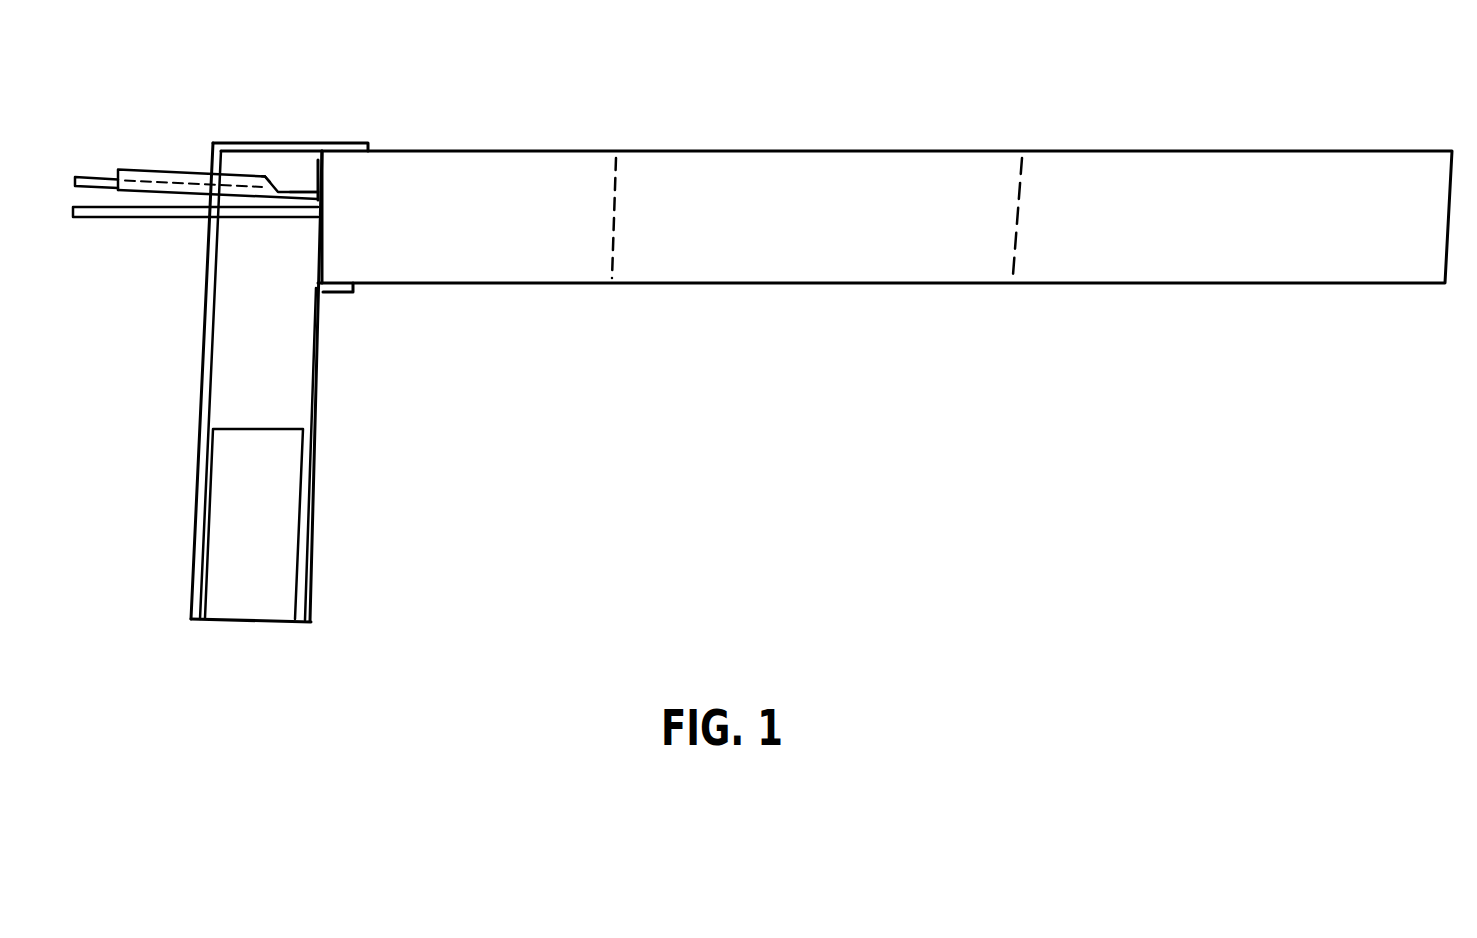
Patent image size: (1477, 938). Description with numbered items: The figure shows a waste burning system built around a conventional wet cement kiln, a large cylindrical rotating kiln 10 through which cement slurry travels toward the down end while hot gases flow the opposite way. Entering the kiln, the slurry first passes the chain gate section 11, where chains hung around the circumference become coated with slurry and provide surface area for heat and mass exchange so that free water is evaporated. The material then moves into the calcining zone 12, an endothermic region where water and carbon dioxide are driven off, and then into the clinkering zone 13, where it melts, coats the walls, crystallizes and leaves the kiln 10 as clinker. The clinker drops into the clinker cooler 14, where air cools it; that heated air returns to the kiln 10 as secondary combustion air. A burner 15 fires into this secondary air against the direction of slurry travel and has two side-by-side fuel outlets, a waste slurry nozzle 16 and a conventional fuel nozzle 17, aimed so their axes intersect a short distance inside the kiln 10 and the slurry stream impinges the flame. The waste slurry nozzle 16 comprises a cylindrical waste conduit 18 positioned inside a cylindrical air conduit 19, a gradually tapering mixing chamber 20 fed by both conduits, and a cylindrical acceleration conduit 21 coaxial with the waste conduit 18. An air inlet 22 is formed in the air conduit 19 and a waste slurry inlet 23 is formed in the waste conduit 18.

The kiln 10 is at (716, 118).
The chain gate section 11 is at (1218, 158).
The calcining zone 12 is at (852, 158).
The clinkering zone 13 is at (473, 172).
The clinker cooler 14 is at (266, 542).
The burner 15 is at (323, 190).
The waste slurry nozzle 16 is at (305, 177).
The conventional fuel nozzle 17 is at (142, 217).
The waste conduit 18 is at (187, 188).
The air conduit 19 is at (157, 178).
The mixing chamber 20 is at (270, 190).
The acceleration conduit 21 is at (298, 193).
The air inlet 22 is at (120, 170).
The waste slurry inlet 23 is at (75, 177).